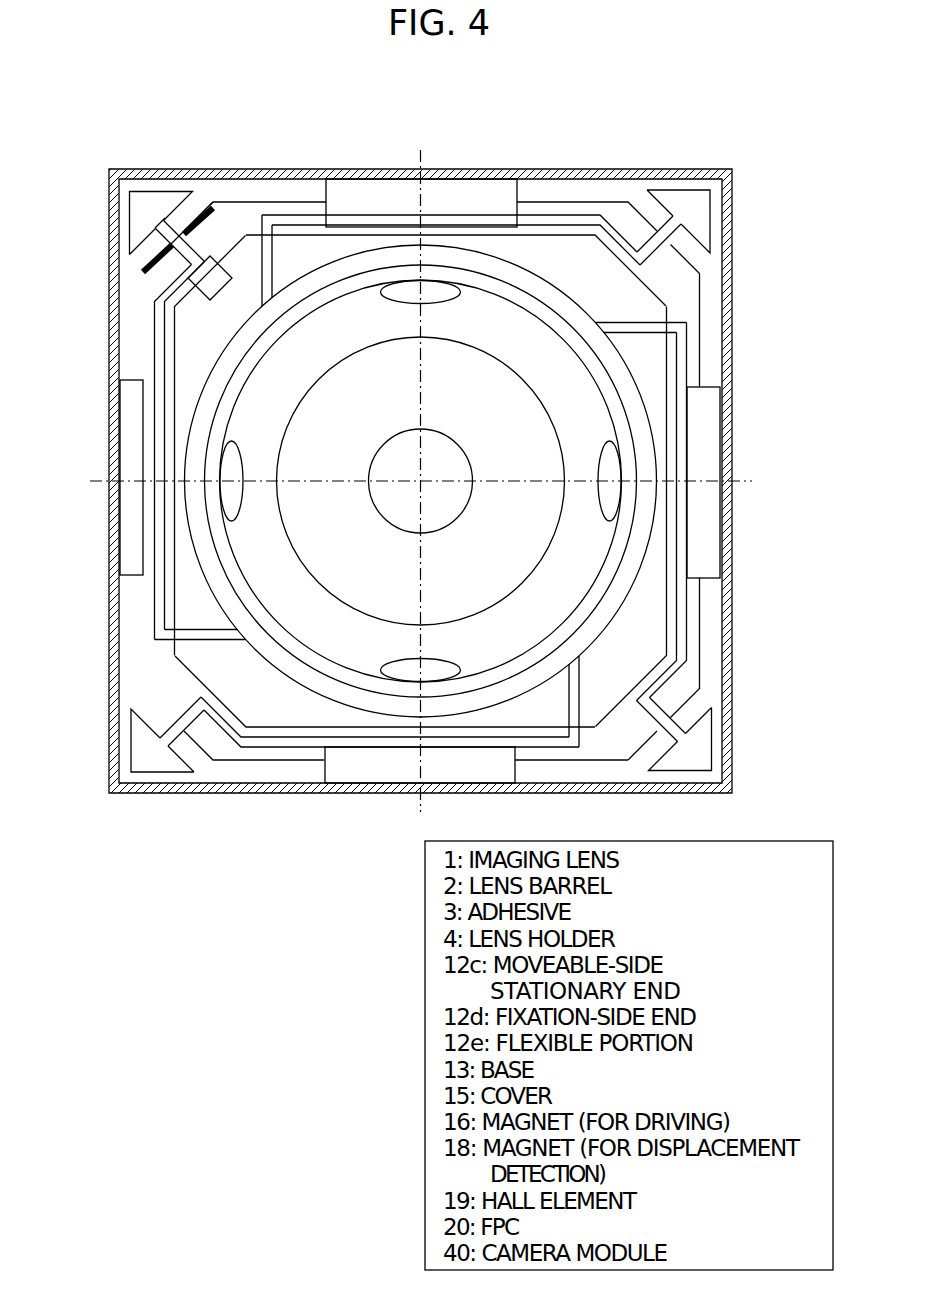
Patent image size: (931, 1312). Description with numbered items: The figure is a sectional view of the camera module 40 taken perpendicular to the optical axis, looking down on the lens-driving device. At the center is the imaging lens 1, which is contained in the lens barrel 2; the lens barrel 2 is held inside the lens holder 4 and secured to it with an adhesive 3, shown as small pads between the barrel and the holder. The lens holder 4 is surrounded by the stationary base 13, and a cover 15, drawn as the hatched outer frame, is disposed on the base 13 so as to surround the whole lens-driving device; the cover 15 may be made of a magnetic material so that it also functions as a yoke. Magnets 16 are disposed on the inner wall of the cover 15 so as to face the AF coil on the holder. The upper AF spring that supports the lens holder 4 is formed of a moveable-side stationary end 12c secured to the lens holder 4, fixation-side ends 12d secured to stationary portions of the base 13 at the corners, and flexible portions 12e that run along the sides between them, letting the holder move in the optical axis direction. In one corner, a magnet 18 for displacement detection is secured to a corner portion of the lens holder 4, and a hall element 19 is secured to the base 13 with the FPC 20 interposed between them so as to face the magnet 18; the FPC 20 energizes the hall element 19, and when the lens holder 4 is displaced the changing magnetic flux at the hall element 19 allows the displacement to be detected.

The imaging lens 1 is at (444, 510).
The lens barrel 2 is at (541, 463).
The adhesive 3 is at (608, 500).
The lens holder 4 is at (632, 292).
The moveable-side stationary end 12c is at (510, 275).
The fixation-side end 12d is at (685, 218).
The flexible portion 12e is at (560, 222).
The base 13 is at (249, 218).
The cover 15 is at (623, 175).
The magnet 16 is at (462, 197).
The magnet for displacement detection 18 is at (205, 290).
The hall element 19 is at (168, 259).
The FPC 20 is at (197, 200).
The camera module 40 is at (709, 78).